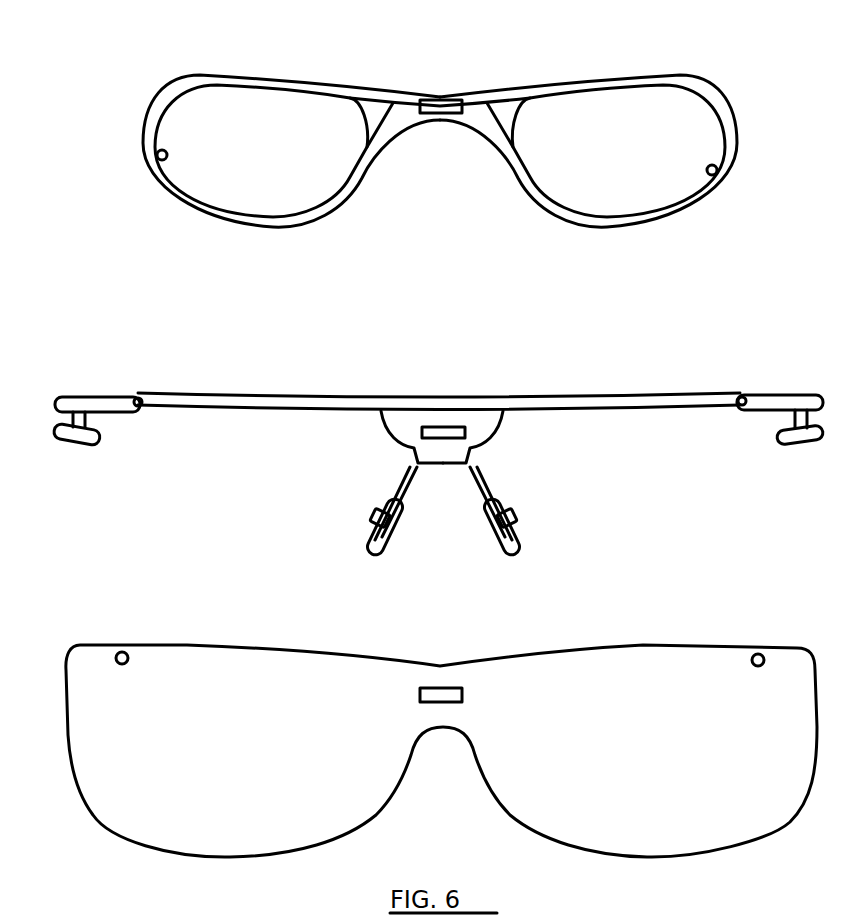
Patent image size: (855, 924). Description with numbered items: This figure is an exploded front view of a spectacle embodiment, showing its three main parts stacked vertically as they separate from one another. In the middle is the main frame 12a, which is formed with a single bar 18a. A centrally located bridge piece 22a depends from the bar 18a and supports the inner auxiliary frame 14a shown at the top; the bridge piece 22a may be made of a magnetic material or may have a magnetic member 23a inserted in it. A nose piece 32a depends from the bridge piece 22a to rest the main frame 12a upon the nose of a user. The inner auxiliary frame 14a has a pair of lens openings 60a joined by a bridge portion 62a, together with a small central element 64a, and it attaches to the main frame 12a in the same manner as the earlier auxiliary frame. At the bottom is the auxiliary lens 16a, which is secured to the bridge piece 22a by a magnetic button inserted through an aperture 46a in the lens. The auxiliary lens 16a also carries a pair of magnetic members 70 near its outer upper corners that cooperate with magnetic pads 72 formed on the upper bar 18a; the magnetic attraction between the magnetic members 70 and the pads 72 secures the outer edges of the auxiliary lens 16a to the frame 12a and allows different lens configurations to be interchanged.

The main frame 12a is at (436, 451).
The inner auxiliary frame 14a is at (152, 104).
The auxiliary lens 16a is at (215, 640).
The bar 18a is at (303, 392).
The bridge piece 22a is at (400, 425).
The magnetic member 23a is at (493, 430).
The nose piece 32a is at (513, 533).
The aperture 46a is at (440, 688).
The lens openings 60a is at (152, 166).
The bridge portion 62a is at (390, 95).
The bridge mounting tab 64a is at (443, 99).
The magnetic members 70 is at (118, 652).
The magnetic pads 72 is at (140, 405).